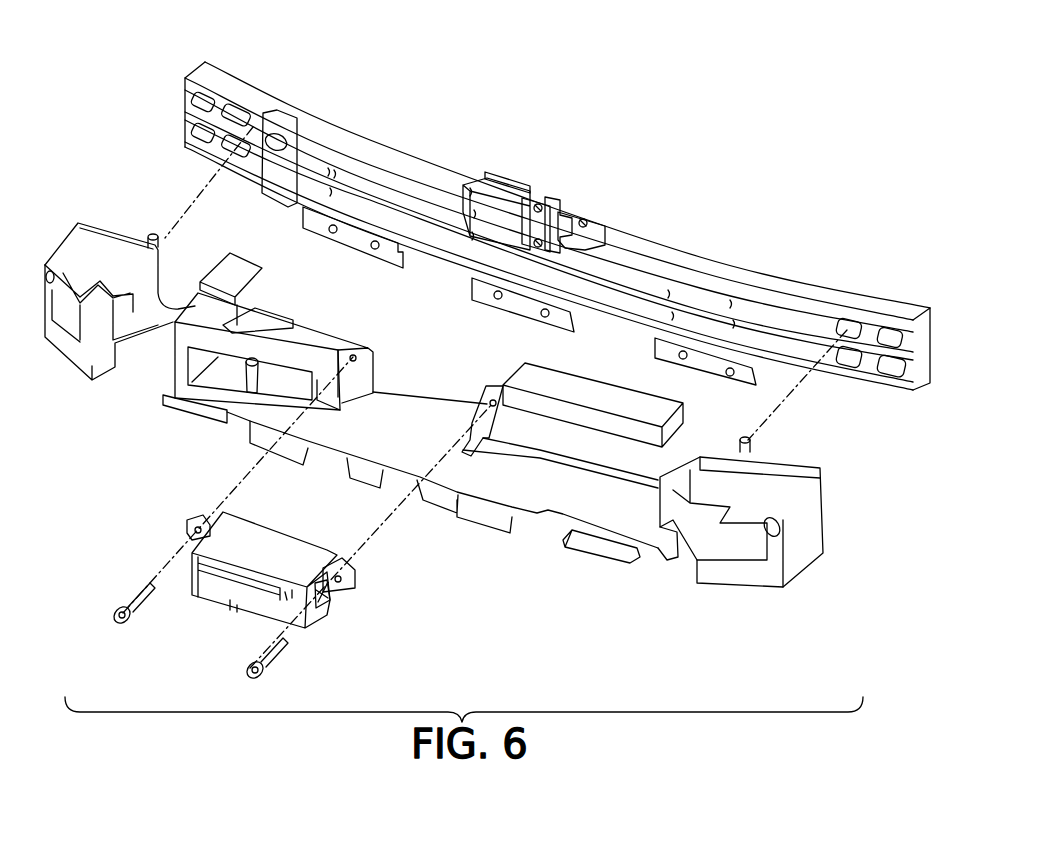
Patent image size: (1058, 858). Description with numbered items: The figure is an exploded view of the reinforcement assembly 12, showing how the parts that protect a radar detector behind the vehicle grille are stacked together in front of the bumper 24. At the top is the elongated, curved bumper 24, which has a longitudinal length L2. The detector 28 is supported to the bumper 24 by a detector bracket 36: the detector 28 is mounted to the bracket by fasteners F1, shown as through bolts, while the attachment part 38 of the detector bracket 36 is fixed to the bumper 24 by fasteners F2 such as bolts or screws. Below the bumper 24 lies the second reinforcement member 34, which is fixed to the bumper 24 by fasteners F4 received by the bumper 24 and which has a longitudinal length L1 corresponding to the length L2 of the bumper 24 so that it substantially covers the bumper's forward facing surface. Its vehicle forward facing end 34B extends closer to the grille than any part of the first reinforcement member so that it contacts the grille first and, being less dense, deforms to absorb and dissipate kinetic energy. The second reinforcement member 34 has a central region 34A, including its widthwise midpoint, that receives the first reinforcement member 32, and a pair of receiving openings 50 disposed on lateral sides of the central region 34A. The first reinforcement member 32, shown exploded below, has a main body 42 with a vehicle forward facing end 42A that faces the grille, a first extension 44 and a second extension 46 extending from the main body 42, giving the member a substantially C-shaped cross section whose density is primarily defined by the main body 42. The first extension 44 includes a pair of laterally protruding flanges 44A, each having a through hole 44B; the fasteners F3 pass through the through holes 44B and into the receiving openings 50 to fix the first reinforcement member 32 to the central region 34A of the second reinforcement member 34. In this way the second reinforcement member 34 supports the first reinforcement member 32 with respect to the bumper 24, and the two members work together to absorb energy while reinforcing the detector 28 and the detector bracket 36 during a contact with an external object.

The reinforcement assembly 12 is at (104, 72).
The bumper 24 is at (729, 265).
The detector 28 is at (465, 176).
The first reinforcement member 32 is at (249, 580).
The second reinforcement member 34 is at (470, 428).
The central region 34A is at (417, 430).
The vehicle forward facing end 34B is at (729, 572).
The detector bracket 36 is at (494, 172).
The attachment part 38 is at (527, 196).
The main body 42 is at (276, 577).
The vehicle forward facing end 42A is at (217, 573).
The first extension 44 is at (273, 576).
The laterally protruding flanges 44A is at (193, 517).
The through hole 44B is at (190, 530).
The second extension 46 is at (337, 607).
The receiving openings 50 is at (358, 357).
The fasteners F1 is at (537, 240).
The fasteners F2 is at (584, 218).
The fasteners F3 is at (112, 617).
The fasteners F4 is at (160, 252).
The longitudinal length L1 is at (850, 440).
The longitudinal length L2 is at (240, 35).